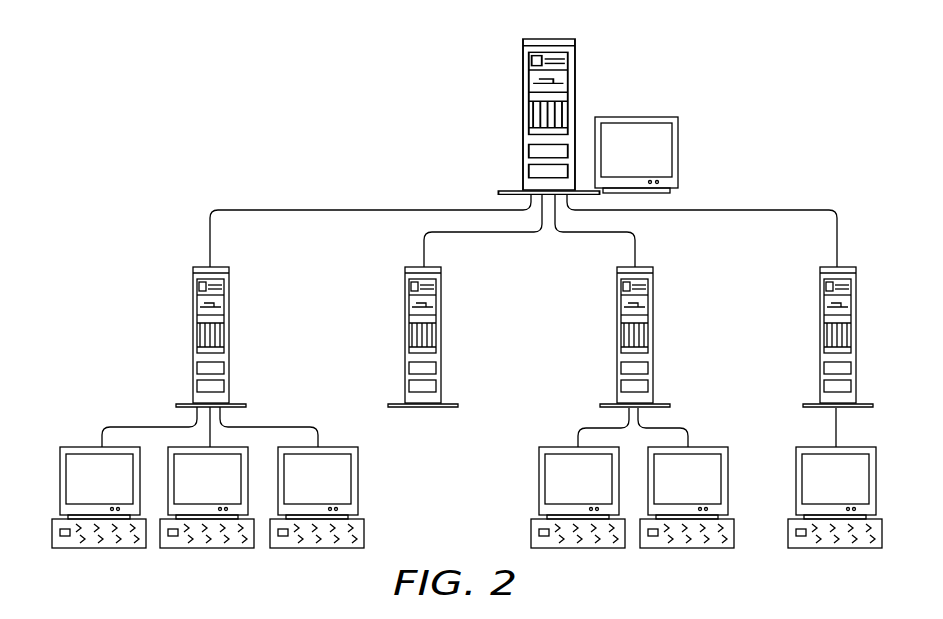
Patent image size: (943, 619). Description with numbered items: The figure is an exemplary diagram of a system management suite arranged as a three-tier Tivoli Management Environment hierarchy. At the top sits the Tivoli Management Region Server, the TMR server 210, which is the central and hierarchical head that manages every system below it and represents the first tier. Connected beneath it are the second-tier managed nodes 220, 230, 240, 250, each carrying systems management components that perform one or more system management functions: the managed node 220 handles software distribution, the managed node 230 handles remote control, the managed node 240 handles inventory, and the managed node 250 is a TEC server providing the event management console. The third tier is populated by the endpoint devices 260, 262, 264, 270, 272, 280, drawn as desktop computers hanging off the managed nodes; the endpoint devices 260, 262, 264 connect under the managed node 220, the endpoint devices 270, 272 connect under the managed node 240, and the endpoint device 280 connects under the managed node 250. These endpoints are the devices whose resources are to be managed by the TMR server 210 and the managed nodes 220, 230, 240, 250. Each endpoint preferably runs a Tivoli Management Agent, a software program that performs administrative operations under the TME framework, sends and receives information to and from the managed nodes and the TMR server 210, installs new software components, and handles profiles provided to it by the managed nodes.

The TMR server 210 is at (523, 118).
The managed node 220 is at (193, 337).
The managed node 230 is at (405, 350).
The managed node 240 is at (617, 350).
The managed node 250 is at (820, 350).
The endpoint device 260 is at (100, 548).
The endpoint device 262 is at (200, 548).
The endpoint device 264 is at (318, 548).
The endpoint device 270 is at (578, 548).
The endpoint device 272 is at (688, 548).
The endpoint device 280 is at (846, 548).